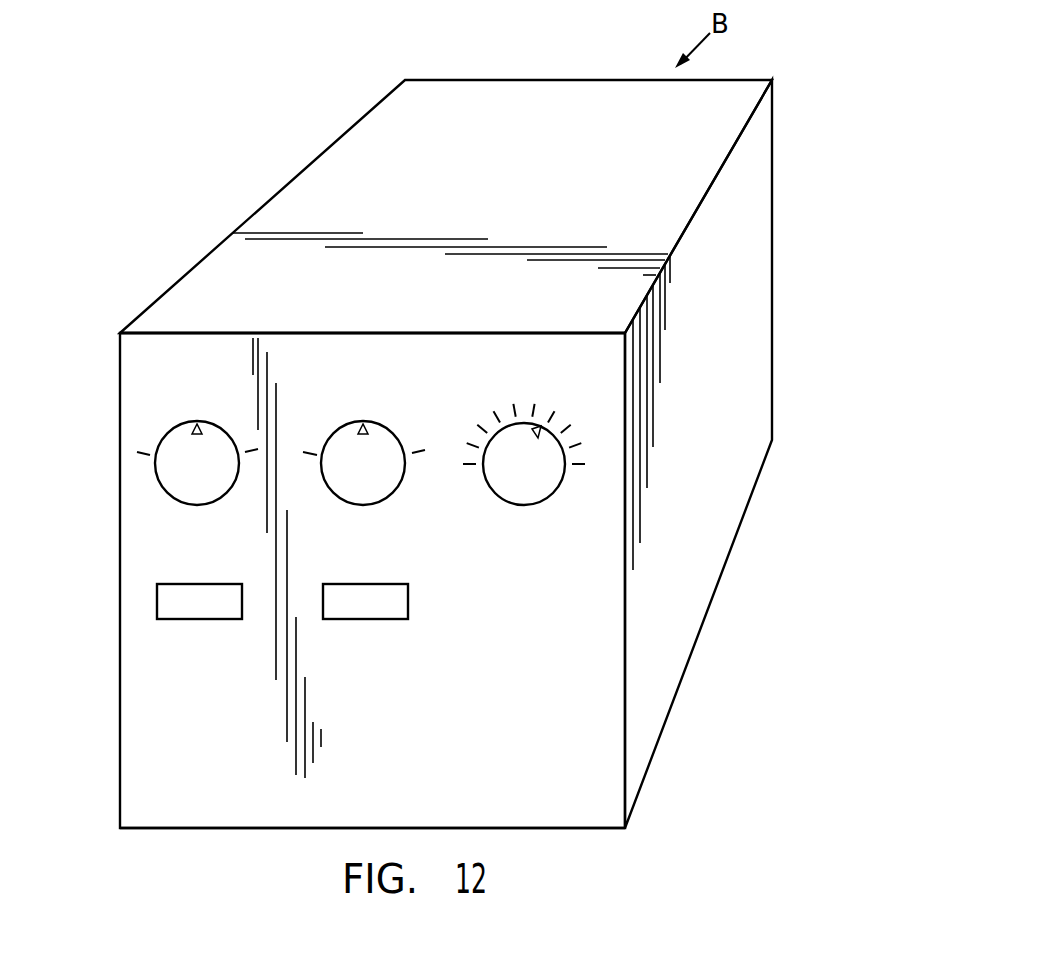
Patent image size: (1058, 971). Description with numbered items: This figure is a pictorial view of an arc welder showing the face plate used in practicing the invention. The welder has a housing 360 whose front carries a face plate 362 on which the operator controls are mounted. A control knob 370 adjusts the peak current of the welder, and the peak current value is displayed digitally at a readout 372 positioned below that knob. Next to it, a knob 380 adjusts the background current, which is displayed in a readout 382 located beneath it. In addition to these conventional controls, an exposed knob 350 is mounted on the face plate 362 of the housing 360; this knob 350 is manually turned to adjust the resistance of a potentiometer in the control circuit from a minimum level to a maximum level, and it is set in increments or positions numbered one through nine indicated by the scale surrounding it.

The knob 350 is at (538, 487).
The housing 360 is at (772, 264).
The face plate 362 is at (148, 713).
The control knob 370 is at (185, 436).
The readout 372 is at (168, 602).
The knob 380 is at (378, 437).
The readout 382 is at (370, 608).